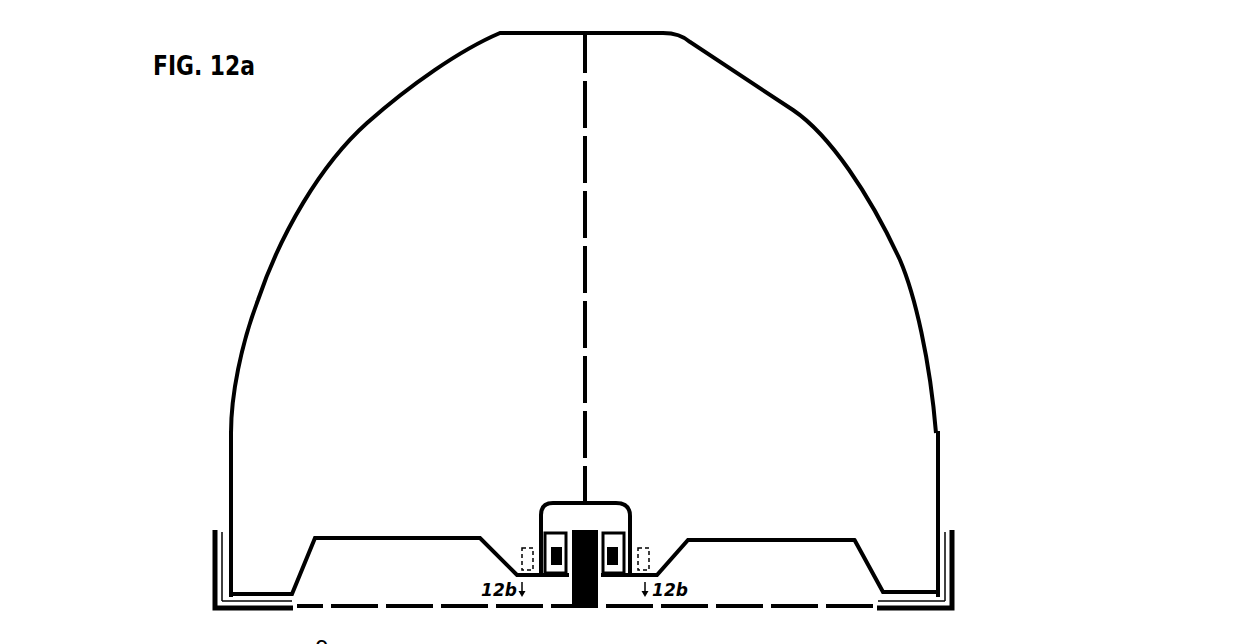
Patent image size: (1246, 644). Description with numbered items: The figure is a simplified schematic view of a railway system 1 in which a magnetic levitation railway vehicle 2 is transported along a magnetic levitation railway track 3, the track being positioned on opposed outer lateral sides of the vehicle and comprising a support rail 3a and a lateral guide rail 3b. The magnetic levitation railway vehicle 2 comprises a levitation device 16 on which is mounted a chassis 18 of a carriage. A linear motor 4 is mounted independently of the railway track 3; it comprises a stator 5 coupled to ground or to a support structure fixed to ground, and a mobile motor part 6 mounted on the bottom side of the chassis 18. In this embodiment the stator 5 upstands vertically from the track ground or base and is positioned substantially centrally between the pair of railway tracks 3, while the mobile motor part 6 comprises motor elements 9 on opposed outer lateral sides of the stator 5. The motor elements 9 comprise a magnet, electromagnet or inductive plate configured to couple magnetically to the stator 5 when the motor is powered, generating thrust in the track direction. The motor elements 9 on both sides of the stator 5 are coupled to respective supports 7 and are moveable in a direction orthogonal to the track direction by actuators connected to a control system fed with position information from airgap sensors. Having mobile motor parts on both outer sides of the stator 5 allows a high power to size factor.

The railway system 1 is at (1161, 188).
The magnetic levitation railway vehicle 2 is at (912, 166).
The magnetic levitation railway track 3 is at (205, 587).
The support rail 3a is at (913, 609).
The lateral guide rail 3b is at (955, 550).
The linear motor 4 is at (647, 544).
The stator 5 is at (583, 530).
The mobile motor part 6 is at (558, 590).
The support 7 is at (556, 591).
The motor elements 9 is at (548, 528).
The levitation device 16 is at (897, 571).
The chassis 18 is at (936, 398).